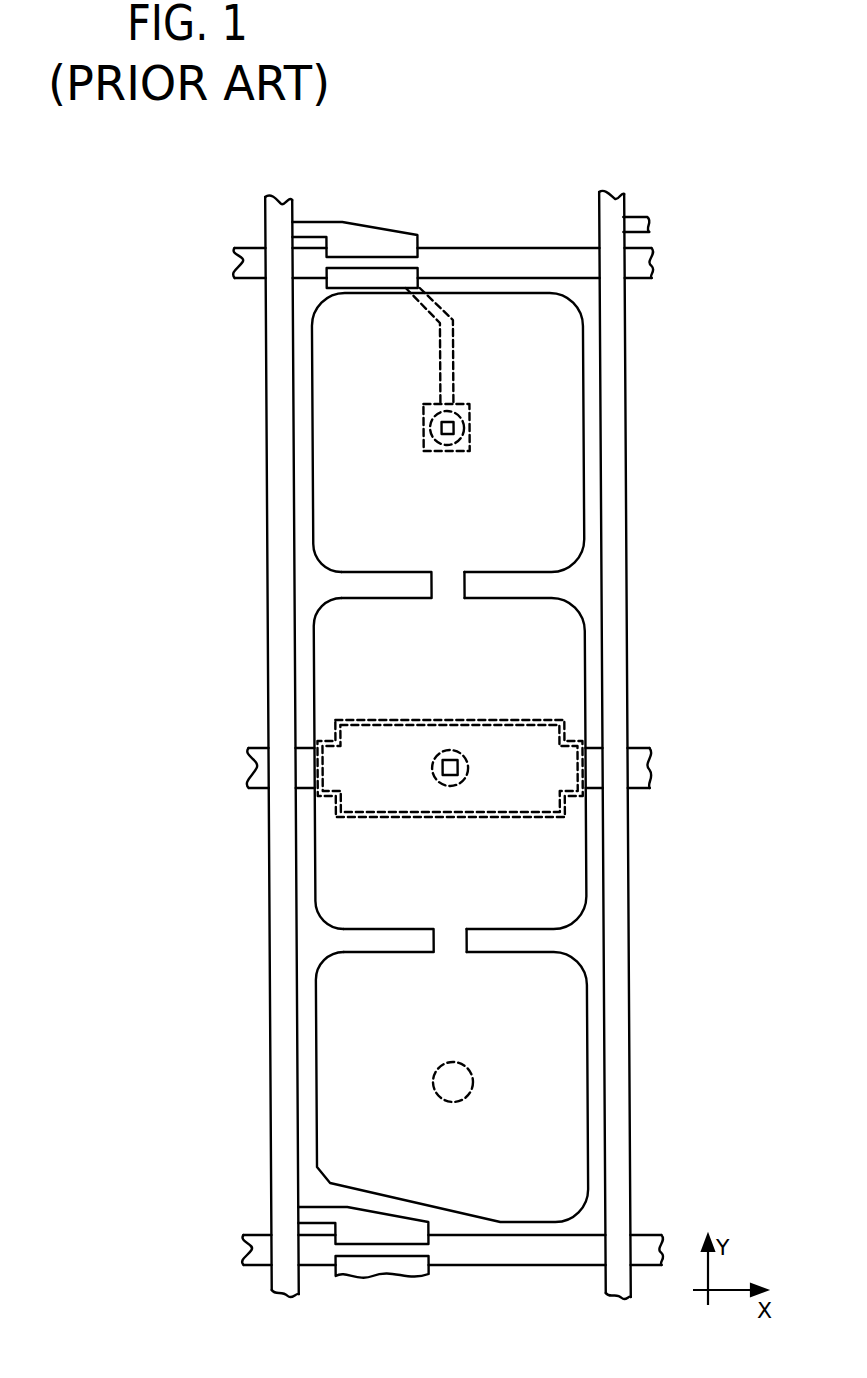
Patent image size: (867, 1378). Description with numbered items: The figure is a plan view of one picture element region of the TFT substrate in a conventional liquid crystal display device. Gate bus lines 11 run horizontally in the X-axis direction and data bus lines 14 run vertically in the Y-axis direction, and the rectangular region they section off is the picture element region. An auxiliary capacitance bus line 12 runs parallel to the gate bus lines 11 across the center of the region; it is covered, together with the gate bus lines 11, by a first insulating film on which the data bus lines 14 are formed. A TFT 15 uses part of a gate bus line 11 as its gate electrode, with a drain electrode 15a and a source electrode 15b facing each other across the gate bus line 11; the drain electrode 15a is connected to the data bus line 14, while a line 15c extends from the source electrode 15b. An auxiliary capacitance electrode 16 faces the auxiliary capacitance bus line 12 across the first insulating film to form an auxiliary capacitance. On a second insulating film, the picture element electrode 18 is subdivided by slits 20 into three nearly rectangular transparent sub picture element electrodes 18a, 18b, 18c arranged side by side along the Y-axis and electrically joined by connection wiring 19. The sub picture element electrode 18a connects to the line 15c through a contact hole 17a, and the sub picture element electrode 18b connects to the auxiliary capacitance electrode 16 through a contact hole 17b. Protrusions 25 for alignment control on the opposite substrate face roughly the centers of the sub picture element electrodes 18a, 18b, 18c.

The gate bus line 11 is at (239, 262).
The auxiliary capacitance bus line 12 is at (242, 766).
The data bus line 14 is at (280, 205).
The TFT 15 is at (474, 723).
The drain electrode 15a is at (378, 236).
The source electrode 15b is at (374, 282).
The line 15c is at (453, 352).
The auxiliary capacitance electrode 16 is at (450, 800).
The contact hole 17a is at (438, 429).
The contact hole 17b is at (437, 770).
The picture element electrode 18 is at (439, 757).
The sub picture element electrode 18a is at (318, 402).
The sub picture element electrode 18b is at (316, 684).
The sub picture element electrode 18c is at (316, 1014).
The connection wiring 19 is at (454, 583).
The slit 20 is at (358, 586).
The protrusion for alignment control 25 is at (464, 442).